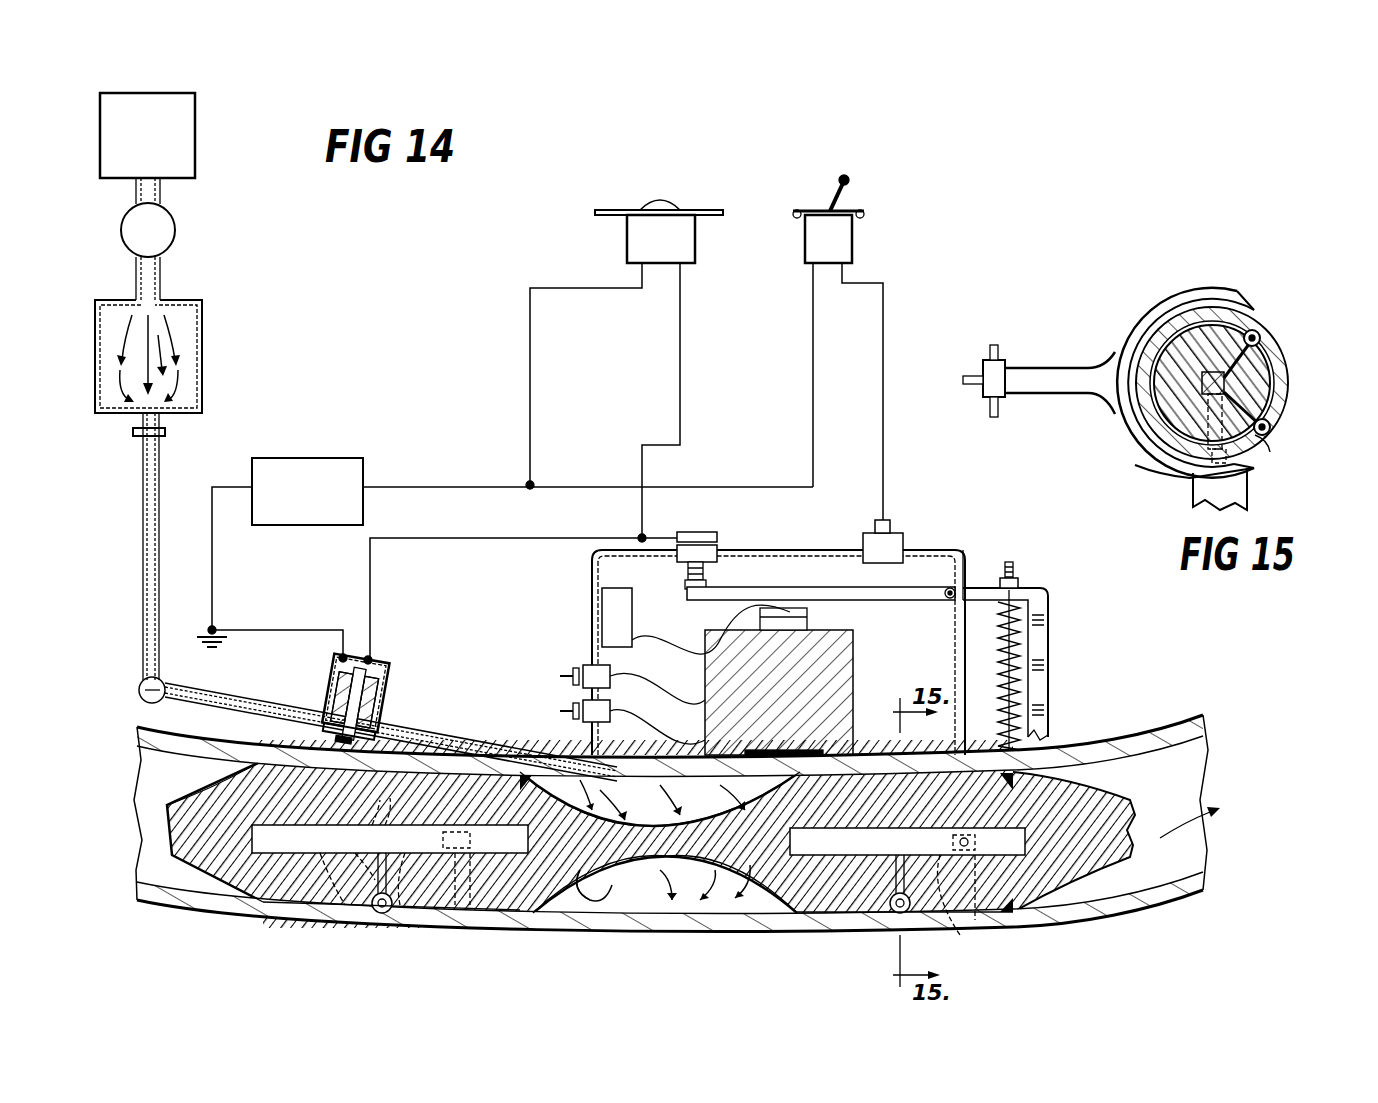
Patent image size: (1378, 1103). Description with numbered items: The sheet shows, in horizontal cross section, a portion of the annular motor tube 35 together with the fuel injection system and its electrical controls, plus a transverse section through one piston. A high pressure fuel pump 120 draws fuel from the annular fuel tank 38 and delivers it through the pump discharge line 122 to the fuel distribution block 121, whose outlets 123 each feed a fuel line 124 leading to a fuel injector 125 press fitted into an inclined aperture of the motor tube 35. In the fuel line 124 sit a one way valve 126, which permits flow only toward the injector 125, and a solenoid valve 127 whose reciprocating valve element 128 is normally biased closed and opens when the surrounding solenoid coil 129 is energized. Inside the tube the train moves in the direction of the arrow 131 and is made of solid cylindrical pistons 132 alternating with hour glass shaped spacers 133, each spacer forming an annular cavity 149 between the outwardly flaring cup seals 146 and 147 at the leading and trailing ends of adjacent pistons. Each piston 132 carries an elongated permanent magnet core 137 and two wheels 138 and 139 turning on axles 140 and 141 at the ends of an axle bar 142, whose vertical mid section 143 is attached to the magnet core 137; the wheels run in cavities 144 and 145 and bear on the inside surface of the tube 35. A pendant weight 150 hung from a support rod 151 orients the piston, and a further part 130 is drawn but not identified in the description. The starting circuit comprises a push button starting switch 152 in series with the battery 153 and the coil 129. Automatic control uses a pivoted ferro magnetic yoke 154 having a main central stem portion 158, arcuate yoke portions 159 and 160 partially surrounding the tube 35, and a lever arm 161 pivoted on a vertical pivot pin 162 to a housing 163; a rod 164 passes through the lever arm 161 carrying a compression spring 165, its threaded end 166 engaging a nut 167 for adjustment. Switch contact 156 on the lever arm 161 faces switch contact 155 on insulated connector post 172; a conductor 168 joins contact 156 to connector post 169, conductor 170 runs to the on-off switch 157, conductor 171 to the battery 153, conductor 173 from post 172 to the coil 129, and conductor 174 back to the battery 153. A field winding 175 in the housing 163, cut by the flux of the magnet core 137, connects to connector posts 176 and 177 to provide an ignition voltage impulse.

In FIG. 14, the annular fuel tank 38 is at (195, 152).
In FIG. 14, the high pressure fuel pump 120 is at (175, 230).
In FIG. 14, the fuel distribution block 121 is at (202, 360).
In FIG. 14, the pump discharge line 122 is at (161, 285).
In FIG. 14, the outlet 123 is at (165, 432).
In FIG. 14, the fuel line 124 is at (143, 563).
In FIG. 14, the fuel injector 125 is at (570, 755).
In FIG. 14, the one way valve 126 is at (139, 691).
In FIG. 14, the solenoid valve 127 is at (386, 702).
In FIG. 14, the reciprocating valve element 128 is at (330, 734).
In FIG. 14, the solenoid coil 129 is at (334, 680).
In FIG. 14, the valve stem 130 is at (443, 841).
In FIG. 15, the valve stem 130 is at (1200, 482).
In FIG. 14, the arrow 131 is at (1180, 838).
In FIG. 14, the piston 132 is at (305, 905).
In FIG. 14, the hour glass shaped spacer 133 is at (195, 870).
In FIG. 14, the annular motor tube 35 is at (655, 925).
In FIG. 15, the annular motor tube 35 is at (1230, 400).
In FIG. 14, the permanent magnet core 137 is at (869, 836).
In FIG. 15, the permanent magnet core 137 is at (1145, 400).
In FIG. 15, the wheel 138 is at (1258, 334).
In FIG. 14, the wheel 139 is at (380, 915).
In FIG. 15, the wheel 139 is at (1272, 445).
In FIG. 15, the axle 140 is at (1262, 348).
In FIG. 15, the axle 141 is at (1270, 428).
In FIG. 14, the axle bar 142 is at (354, 840).
In FIG. 15, the axle bar 142 is at (1255, 330).
In FIG. 14, the vertical mid section 143 is at (382, 845).
In FIG. 15, the vertical mid section 143 is at (1240, 376).
In FIG. 15, the cavity 144 is at (1268, 362).
In FIG. 14, the cavity 145 is at (345, 906).
In FIG. 15, the cavity 145 is at (1268, 432).
In FIG. 14, the cup seal 146 is at (525, 782).
In FIG. 14, the cup seal 147 is at (248, 898).
In FIG. 14, the annular cavity 149 is at (655, 906).
In FIG. 14, the pendant weight 150 is at (455, 915).
In FIG. 15, the pendant weight 150 is at (1255, 480).
In FIG. 15, the support rod 151 is at (1275, 458).
In FIG. 14, the push button starting switch 152 is at (695, 245).
In FIG. 14, the battery 153 is at (335, 458).
In FIG. 14, the ferro magnetic yoke 154 is at (1049, 689).
In FIG. 15, the ferro magnetic yoke 154 is at (1050, 368).
In FIG. 14, the switch contact 155 is at (704, 583).
In FIG. 14, the switch contact 156 is at (686, 582).
In FIG. 14, the on-off switch 157 is at (852, 240).
In FIG. 14, the main central stem portion 158 is at (1049, 632).
In FIG. 15, the arcuate yoke portion 159 is at (1135, 468).
In FIG. 15, the arcuate yoke portion 160 is at (1160, 296).
In FIG. 14, the lever arm 161 is at (905, 601).
In FIG. 14, the vertical pivot pin 162 is at (953, 590).
In FIG. 15, the vertical pivot pin 162 is at (1000, 356).
In FIG. 14, the housing 163 is at (963, 550).
In FIG. 14, the rod 164 is at (998, 661).
In FIG. 14, the compression spring 165 is at (633, 629).
In FIG. 14, the threaded end 166 is at (1014, 568).
In FIG. 15, the threaded end 166 is at (970, 372).
In FIG. 14, the nut 167 is at (1019, 583).
In FIG. 15, the nut 167 is at (996, 405).
In FIG. 14, the conductor 168 is at (865, 548).
In FIG. 14, the insulated connector post 169 is at (891, 521).
In FIG. 14, the conductor 170 is at (883, 376).
In FIG. 14, the conductor 171 is at (813, 380).
In FIG. 14, the insulated connector post 172 is at (700, 535).
In FIG. 14, the conductor 173 is at (535, 538).
In FIG. 14, the conductor 174 is at (284, 630).
In FIG. 14, the field winding 175 is at (853, 693).
In FIG. 14, the connector post 176 is at (583, 671).
In FIG. 14, the connector post 177 is at (573, 711).